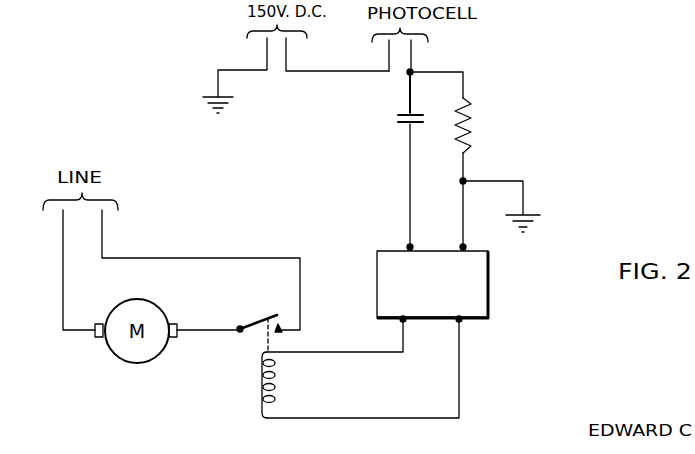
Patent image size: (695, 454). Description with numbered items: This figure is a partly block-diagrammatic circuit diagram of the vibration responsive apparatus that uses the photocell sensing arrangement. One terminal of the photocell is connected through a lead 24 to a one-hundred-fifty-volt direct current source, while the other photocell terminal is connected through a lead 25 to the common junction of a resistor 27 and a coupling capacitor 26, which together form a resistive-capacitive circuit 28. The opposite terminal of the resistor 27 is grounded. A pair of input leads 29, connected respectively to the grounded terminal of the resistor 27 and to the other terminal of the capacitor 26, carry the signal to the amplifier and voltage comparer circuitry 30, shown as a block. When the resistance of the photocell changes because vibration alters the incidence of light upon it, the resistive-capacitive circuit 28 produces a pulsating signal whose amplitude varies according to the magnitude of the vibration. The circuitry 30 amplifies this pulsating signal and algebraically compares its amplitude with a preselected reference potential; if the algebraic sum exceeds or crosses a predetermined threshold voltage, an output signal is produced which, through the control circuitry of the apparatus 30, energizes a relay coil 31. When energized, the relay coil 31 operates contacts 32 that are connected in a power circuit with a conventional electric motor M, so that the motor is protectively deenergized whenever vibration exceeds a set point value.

The lead 24 is at (335, 71).
The lead 25 is at (439, 70).
The coupling capacitor 26 is at (397, 122).
The resistor 27 is at (463, 157).
The resistive-capacitive circuit 28 is at (490, 108).
The input leads 29 is at (408, 188).
The amplifier and voltage comparer circuitry 30 is at (488, 307).
The relay coil 31 is at (262, 390).
The contacts 32 is at (262, 315).